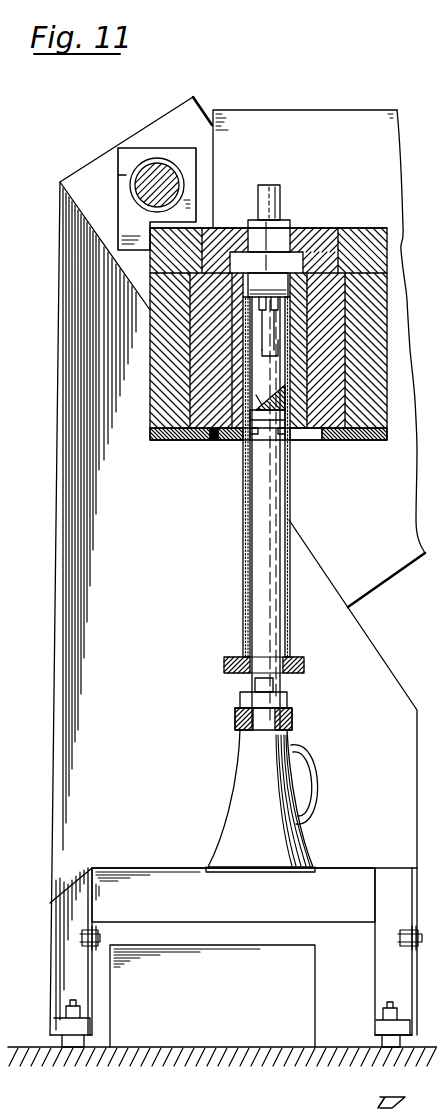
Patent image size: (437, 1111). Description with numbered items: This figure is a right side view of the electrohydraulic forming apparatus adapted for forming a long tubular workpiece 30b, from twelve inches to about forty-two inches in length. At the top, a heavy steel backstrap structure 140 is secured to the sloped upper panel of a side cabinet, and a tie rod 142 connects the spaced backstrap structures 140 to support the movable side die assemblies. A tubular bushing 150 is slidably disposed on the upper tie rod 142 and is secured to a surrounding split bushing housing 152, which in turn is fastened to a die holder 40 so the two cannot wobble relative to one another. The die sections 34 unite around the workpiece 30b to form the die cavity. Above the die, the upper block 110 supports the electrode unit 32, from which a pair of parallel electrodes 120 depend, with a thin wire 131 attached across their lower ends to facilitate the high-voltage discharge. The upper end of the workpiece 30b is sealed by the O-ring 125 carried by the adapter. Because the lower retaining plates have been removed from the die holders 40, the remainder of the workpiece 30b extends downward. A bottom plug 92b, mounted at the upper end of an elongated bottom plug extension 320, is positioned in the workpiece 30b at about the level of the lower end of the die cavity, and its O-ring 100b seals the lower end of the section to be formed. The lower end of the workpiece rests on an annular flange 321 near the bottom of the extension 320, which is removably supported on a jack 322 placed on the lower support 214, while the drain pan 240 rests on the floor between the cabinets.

The backstrap structure 140 is at (196, 97).
The tie rod 142 is at (157, 168).
The tubular bushing 150 is at (142, 165).
The bushing housing 152 is at (120, 172).
The electrode unit 32 is at (293, 194).
The sealing O-ring 125 is at (258, 266).
The upper block 110 is at (318, 242).
The die holder 40 is at (153, 338).
The electrode 120 is at (268, 335).
The thin wire 131 is at (278, 357).
The bottom plug 92b is at (257, 398).
The die section 34 is at (220, 441).
The O-ring 100b is at (246, 458).
The long tubular workpiece 30b is at (243, 509).
The bottom plug extension 320 is at (282, 542).
The annular flange 321 is at (305, 666).
The jack 322 is at (242, 780).
The lower support 214 is at (302, 907).
The drain pan 240 is at (248, 988).